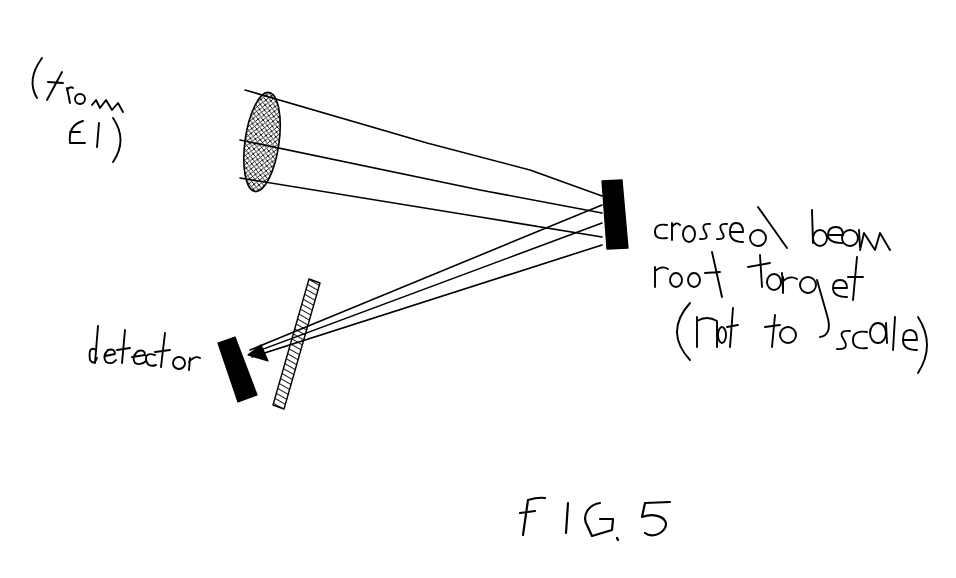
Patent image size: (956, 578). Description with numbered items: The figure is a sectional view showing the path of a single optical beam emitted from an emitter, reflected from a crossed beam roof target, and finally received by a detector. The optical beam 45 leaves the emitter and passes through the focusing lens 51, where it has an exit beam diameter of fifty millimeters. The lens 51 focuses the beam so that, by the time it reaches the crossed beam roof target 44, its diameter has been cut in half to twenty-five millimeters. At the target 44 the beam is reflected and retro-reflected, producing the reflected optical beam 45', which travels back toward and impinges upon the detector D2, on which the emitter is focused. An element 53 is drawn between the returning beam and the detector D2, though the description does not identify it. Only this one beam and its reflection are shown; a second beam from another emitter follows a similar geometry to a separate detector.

The lens 51 is at (247, 128).
The optical beam 45 is at (421, 150).
The crossed beam roof target 44 is at (628, 193).
The reflected optical beam 45' is at (425, 283).
The beam splitter 53 is at (303, 367).
The detector D2 is at (228, 376).